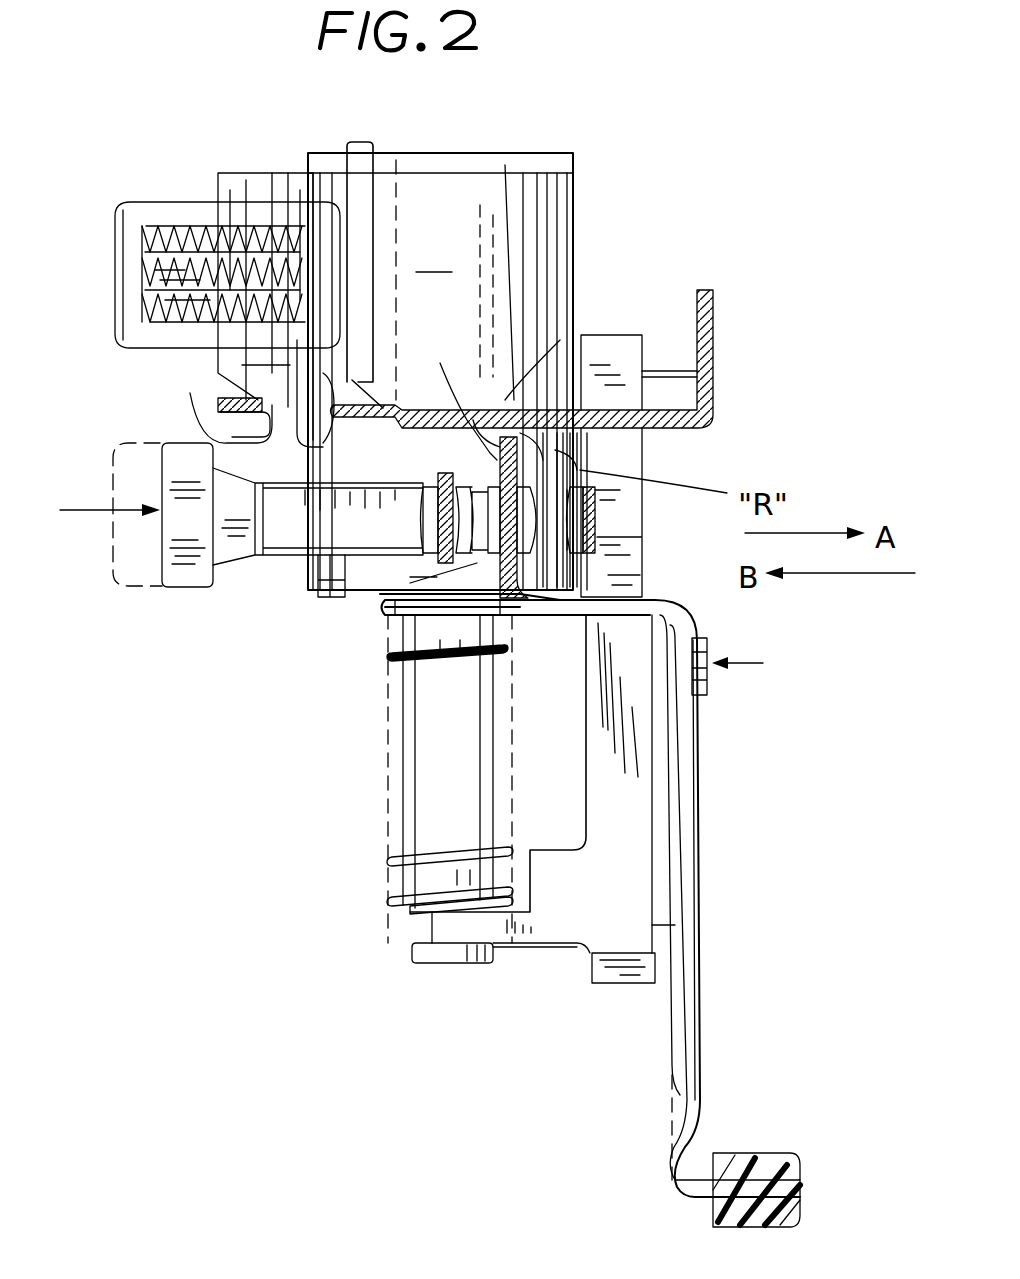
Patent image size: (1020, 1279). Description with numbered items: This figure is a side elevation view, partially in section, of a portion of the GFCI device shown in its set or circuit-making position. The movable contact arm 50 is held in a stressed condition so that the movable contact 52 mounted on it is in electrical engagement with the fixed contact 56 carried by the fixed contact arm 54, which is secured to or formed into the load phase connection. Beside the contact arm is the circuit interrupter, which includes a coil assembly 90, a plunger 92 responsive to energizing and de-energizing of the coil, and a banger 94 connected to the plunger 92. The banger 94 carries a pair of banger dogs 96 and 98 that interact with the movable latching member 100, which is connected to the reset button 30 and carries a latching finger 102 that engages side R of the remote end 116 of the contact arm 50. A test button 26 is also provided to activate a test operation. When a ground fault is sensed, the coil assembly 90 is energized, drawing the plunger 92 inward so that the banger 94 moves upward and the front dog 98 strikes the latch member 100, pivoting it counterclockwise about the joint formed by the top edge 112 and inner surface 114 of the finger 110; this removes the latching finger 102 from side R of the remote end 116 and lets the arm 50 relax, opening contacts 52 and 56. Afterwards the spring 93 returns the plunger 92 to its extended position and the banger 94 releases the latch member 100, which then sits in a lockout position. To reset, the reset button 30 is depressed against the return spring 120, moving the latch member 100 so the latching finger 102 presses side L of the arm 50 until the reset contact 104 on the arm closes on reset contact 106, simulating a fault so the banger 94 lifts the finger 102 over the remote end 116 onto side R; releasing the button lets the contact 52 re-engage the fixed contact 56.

The test button 26 is at (146, 463).
The reset button 30 is at (95, 208).
The movable contact arm 50 is at (783, 775).
The movable contact 52 is at (490, 612).
The fixed contact arm 54 is at (385, 598).
The fixed contact 56 is at (461, 496).
The coil assembly 90 is at (435, 366).
The plunger 92 is at (490, 748).
The spring 93 is at (388, 858).
The banger 94 is at (660, 928).
The banger dog 96 is at (697, 372).
The banger front dog 98 is at (600, 569).
The movable latching member 100 is at (715, 302).
The latching finger 102 is at (577, 455).
The reset contact 104 is at (610, 473).
The reset contact 106 is at (603, 520).
The finger 110 is at (318, 504).
The top edge 112 is at (245, 423).
The inner surface 114 is at (240, 437).
The remote end 116 is at (507, 407).
The return spring 120 is at (150, 297).